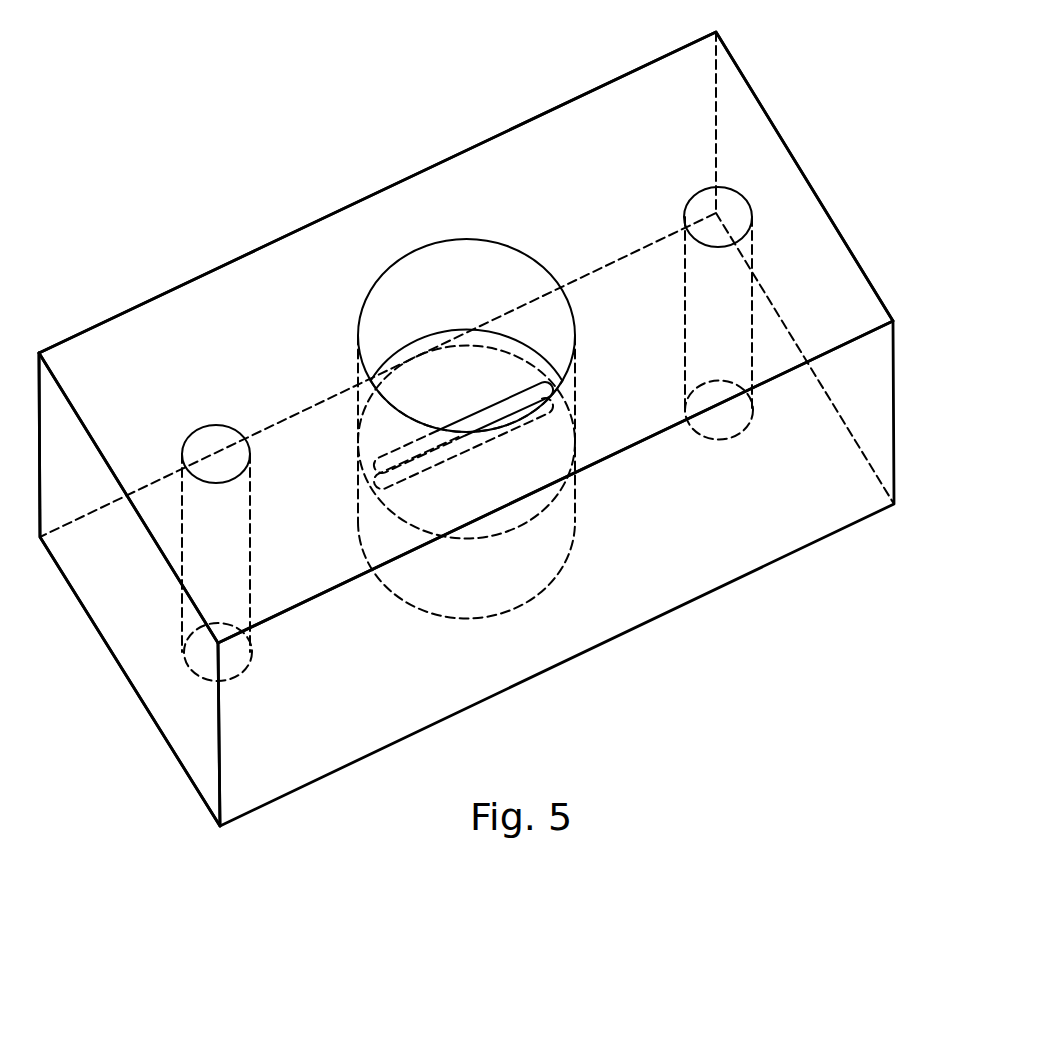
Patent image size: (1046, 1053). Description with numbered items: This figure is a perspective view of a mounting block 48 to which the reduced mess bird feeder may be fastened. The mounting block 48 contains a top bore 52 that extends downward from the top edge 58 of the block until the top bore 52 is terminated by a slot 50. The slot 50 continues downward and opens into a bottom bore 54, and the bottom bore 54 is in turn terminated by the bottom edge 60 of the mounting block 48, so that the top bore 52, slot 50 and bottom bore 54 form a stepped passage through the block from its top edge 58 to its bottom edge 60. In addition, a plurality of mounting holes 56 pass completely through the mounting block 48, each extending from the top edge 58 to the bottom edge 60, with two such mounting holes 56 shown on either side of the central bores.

The mounting block 48 is at (778, 75).
The slot 50 is at (485, 405).
The top bore 52 is at (405, 255).
The bottom bore 54 is at (545, 592).
The mounting holes 56 is at (198, 428).
The top edge 58 is at (215, 352).
The bottom edge 60 is at (173, 757).